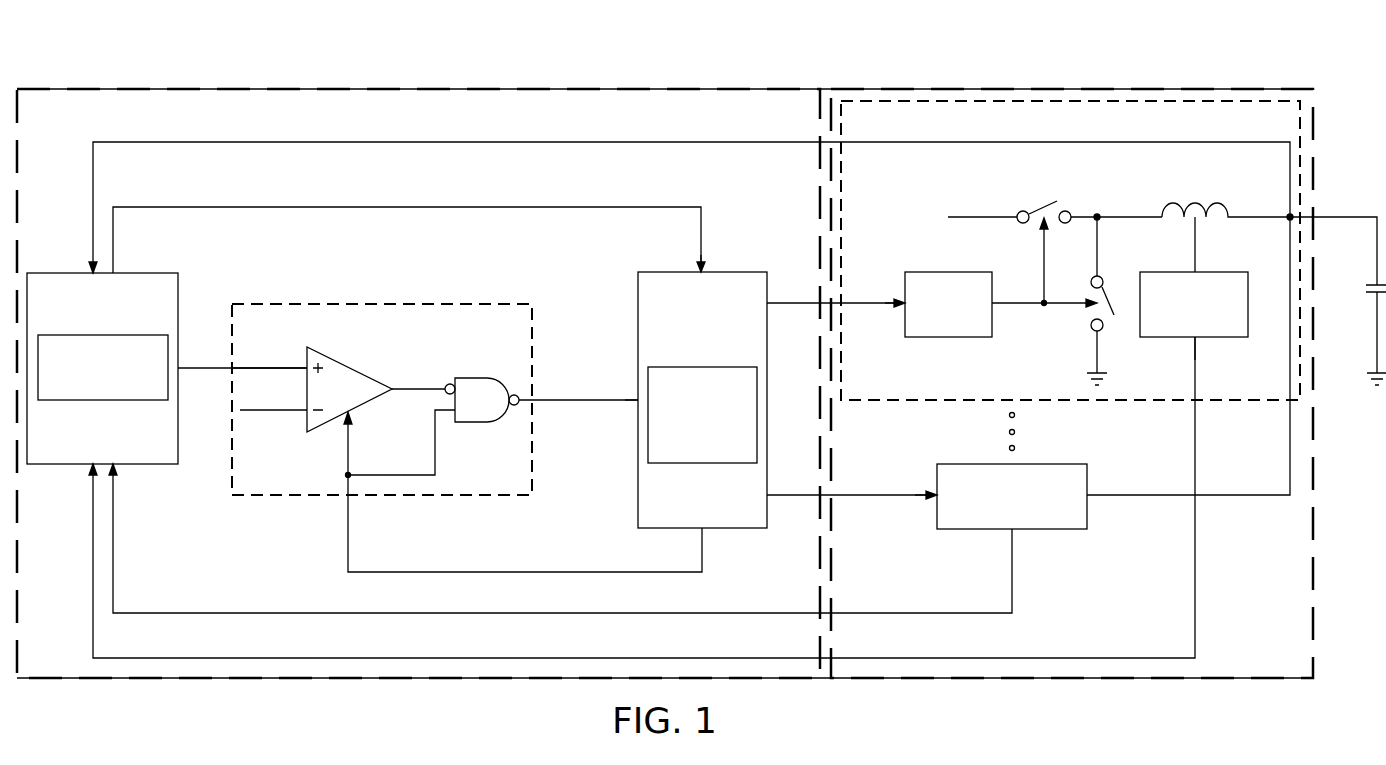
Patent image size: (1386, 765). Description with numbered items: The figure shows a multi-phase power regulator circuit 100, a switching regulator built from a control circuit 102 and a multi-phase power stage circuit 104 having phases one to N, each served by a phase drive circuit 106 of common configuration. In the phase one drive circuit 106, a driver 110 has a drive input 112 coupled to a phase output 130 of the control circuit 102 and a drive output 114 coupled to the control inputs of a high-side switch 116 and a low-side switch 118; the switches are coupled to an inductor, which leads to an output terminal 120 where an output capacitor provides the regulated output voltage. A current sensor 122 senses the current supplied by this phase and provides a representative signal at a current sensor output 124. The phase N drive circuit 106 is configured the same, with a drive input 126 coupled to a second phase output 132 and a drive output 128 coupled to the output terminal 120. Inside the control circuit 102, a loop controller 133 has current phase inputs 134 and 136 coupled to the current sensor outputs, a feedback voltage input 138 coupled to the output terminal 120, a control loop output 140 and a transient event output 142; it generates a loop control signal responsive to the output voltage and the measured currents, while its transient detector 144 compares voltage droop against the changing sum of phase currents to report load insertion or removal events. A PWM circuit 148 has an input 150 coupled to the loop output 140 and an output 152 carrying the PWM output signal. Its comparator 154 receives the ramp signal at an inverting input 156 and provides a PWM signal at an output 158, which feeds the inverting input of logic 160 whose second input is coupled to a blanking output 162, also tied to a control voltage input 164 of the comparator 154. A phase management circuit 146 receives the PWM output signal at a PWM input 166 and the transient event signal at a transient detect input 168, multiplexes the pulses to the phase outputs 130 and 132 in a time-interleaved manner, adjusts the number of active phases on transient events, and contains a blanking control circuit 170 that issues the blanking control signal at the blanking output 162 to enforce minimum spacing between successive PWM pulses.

The multi-phase power regulator circuit 100 is at (518, 70).
The control circuit 102 is at (339, 80).
The multi-phase power stage circuit 104 is at (1152, 80).
The phase drive circuit 106 is at (1128, 412).
The driver 110 is at (950, 339).
The drive input 112 is at (900, 312).
The drive output 114 is at (995, 312).
The high-side switch 116 is at (1040, 206).
The low-side switch 118 is at (1114, 290).
The output terminal 120 is at (1285, 212).
The current sensor 122 is at (1226, 339).
The current sensor output 124 is at (1188, 340).
The drive input 126 is at (930, 505).
The drive output 128 is at (1090, 505).
The phase output 130 is at (773, 298).
The phase output 132 is at (772, 503).
The loop controller 133 is at (180, 292).
The current phase input 134 is at (85, 476).
The current phase input 136 is at (119, 476).
The feedback voltage input 138 is at (86, 264).
The control loop output 140 is at (181, 376).
The transient event output 142 is at (118, 270).
The transient detector 144 is at (105, 402).
The phase management circuit 146 is at (672, 271).
The PWM circuit 148 is at (337, 290).
The input 150 is at (302, 360).
The output 152 is at (538, 408).
The comparator 154 is at (368, 362).
The inverting input 156 is at (302, 416).
The output 158 is at (396, 383).
The logic 160 is at (478, 377).
The blanking output 162 is at (710, 534).
The control voltage input 164 is at (358, 418).
The PWM input 166 is at (633, 408).
The transient detect input 168 is at (708, 270).
The blanking control circuit 170 is at (705, 466).